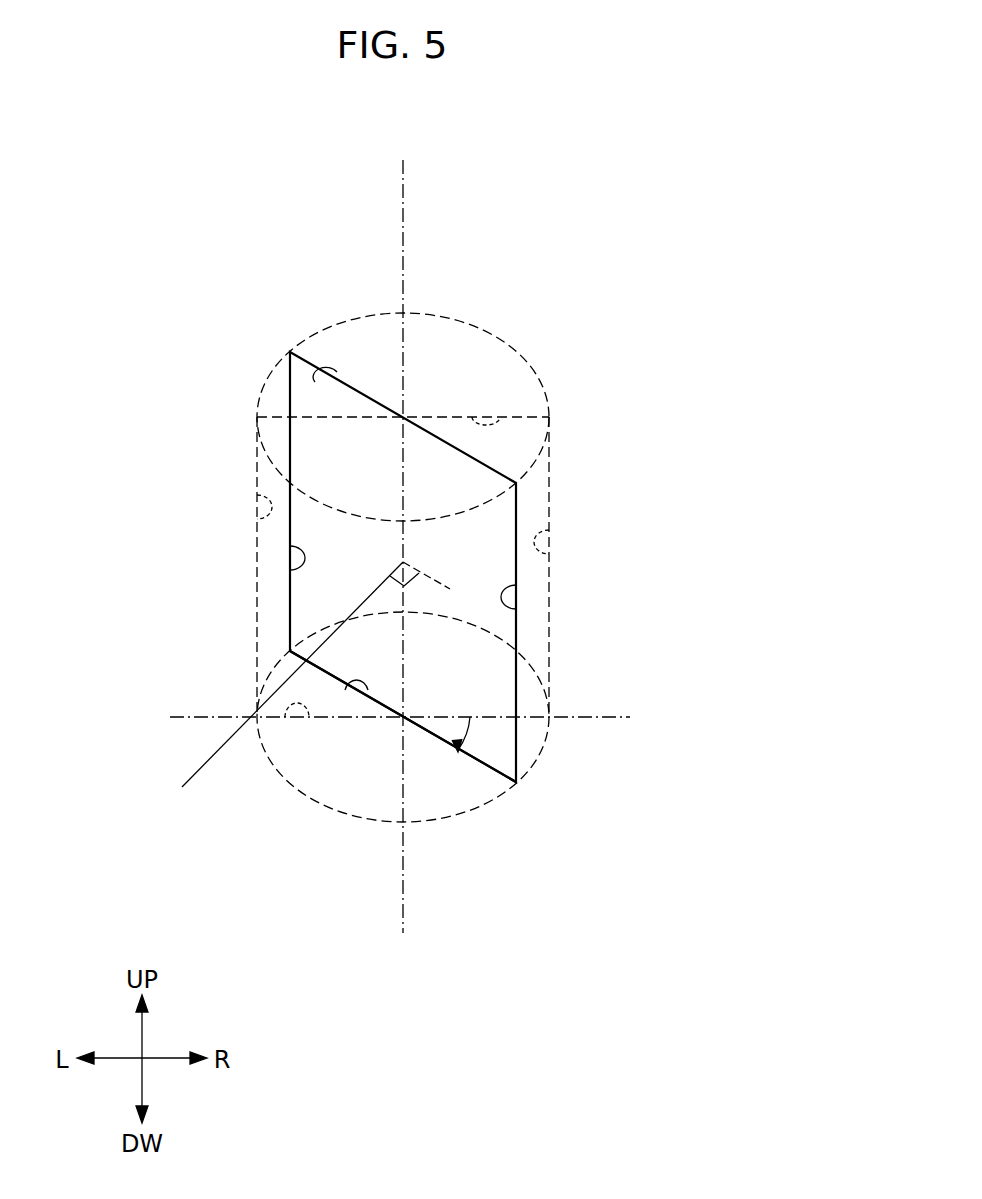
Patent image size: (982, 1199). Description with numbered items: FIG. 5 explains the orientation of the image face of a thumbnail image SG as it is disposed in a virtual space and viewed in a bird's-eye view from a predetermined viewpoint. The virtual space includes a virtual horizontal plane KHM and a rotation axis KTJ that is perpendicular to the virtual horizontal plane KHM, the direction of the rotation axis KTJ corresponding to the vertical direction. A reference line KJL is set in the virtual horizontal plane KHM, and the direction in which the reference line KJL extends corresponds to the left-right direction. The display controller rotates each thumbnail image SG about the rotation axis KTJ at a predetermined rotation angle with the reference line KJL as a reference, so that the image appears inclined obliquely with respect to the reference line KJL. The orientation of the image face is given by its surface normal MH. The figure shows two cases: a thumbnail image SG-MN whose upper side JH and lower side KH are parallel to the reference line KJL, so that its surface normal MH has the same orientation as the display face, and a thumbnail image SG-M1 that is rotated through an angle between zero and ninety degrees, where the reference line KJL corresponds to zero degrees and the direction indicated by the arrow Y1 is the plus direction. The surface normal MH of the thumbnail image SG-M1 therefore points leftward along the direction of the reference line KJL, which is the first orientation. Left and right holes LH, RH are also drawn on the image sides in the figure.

The rotation axis KTJ is at (405, 178).
The reference line KJL is at (613, 717).
The thumbnail image SG is at (461, 550).
The thumbnail image facing first orientation SG-M1 is at (288, 390).
The thumbnail image facing neither orientation SG-MN is at (550, 462).
The virtual horizontal plane KHM is at (540, 757).
The arrow Y1 is at (448, 732).
The upper side JH is at (335, 377).
The left hole LH is at (265, 515).
The right hole RH is at (549, 552).
The lower side KH is at (346, 690).
The surface normal MH is at (200, 770).